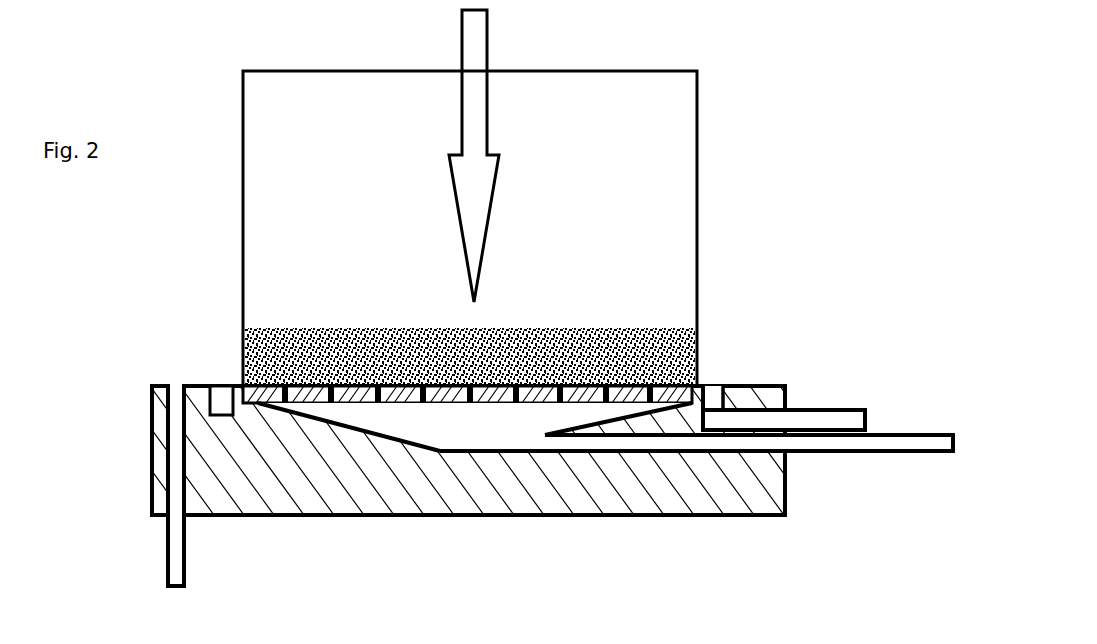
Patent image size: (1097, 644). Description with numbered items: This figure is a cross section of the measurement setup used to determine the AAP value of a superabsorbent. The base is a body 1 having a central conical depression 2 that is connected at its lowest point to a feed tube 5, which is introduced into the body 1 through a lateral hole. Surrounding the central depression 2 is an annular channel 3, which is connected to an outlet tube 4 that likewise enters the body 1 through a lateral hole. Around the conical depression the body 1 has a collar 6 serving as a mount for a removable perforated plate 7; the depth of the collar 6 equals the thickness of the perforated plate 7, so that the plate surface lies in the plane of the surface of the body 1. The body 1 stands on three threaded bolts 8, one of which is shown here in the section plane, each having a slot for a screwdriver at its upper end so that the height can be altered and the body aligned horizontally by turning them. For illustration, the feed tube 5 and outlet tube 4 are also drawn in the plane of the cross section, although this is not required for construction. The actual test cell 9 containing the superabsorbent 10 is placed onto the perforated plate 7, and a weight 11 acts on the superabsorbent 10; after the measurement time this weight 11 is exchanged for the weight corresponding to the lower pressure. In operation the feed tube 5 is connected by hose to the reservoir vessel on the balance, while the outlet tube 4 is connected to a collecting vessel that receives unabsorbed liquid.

The body 1 is at (200, 386).
The central conical depression 2 is at (498, 425).
The annular channel 3 is at (720, 394).
The outlet tube 4 is at (805, 410).
The feed tube 5 is at (917, 433).
The collar 6 is at (280, 332).
The perforated plate 7 is at (405, 328).
The threaded bolt 8 is at (166, 540).
The test cell 9 is at (697, 125).
The superabsorbent 10 is at (638, 330).
The weight 11 is at (477, 41).